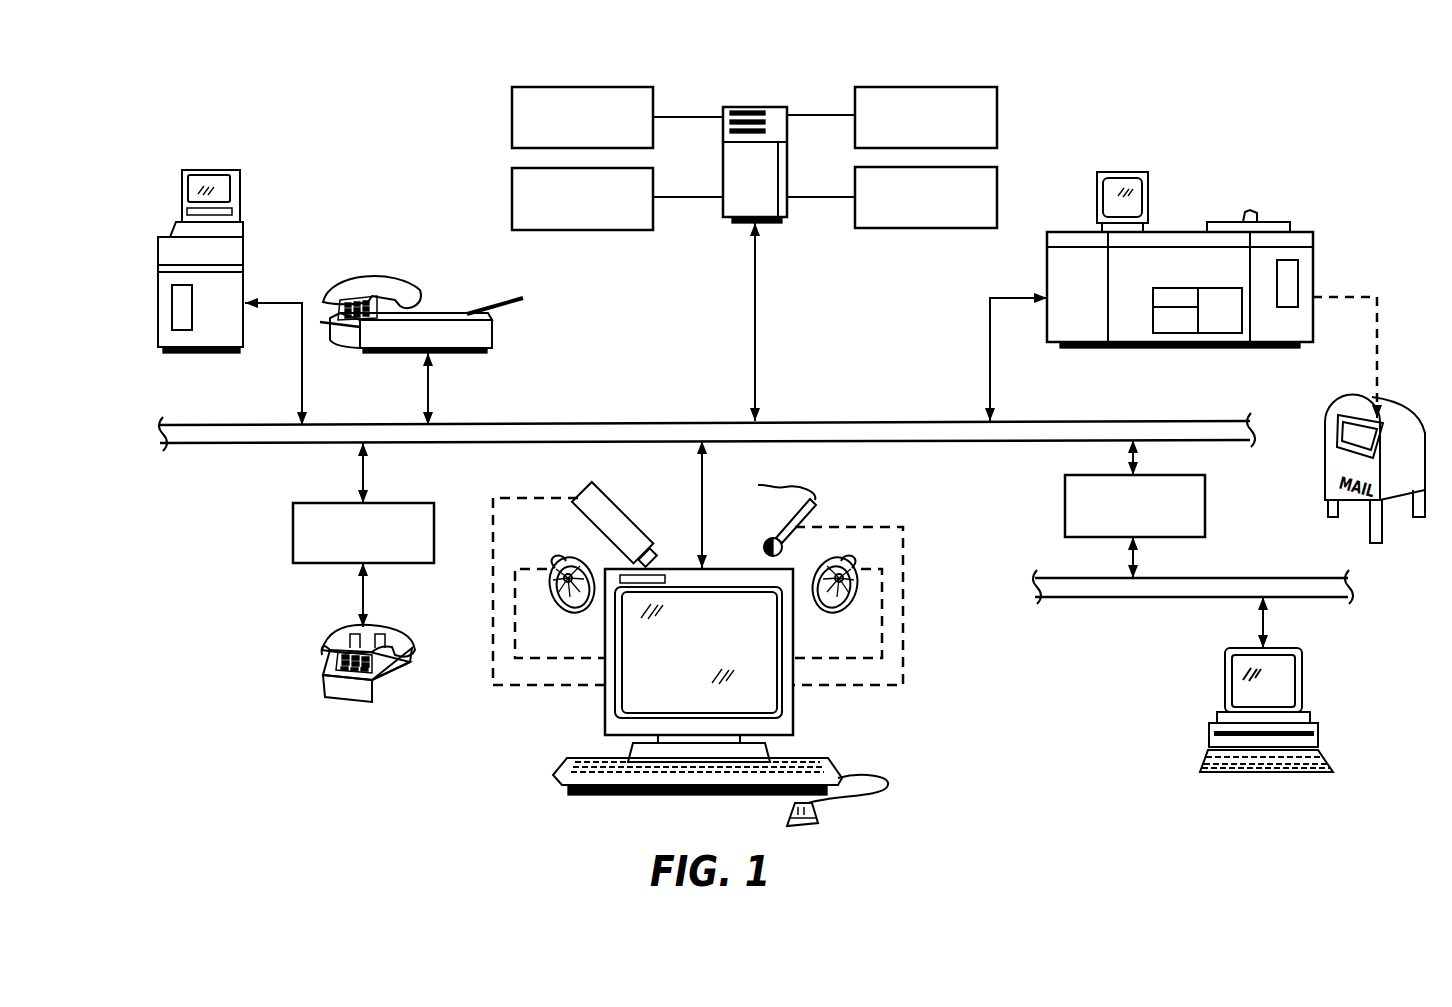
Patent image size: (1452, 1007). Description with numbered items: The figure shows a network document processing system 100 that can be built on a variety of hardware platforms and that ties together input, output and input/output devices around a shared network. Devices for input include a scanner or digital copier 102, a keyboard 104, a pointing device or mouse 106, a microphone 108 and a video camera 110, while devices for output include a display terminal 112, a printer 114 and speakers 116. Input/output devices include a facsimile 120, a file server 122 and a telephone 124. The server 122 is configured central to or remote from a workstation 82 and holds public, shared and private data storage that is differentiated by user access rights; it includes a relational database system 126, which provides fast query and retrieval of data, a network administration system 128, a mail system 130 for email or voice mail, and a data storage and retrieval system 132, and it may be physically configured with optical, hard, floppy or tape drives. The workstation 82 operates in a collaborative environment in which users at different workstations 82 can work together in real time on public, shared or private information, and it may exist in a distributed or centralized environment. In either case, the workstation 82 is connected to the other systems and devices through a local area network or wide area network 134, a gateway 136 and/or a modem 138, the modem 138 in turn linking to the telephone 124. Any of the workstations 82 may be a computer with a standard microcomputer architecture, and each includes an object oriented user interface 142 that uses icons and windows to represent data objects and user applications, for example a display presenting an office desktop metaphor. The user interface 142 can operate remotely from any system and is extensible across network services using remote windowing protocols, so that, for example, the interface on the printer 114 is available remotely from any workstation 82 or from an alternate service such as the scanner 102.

The network document processing system 100 is at (418, 170).
The scanner or digital copier 102 is at (245, 285).
The keyboard 104 is at (795, 760).
The pointing device or mouse 106 is at (807, 828).
The microphone 108 is at (787, 522).
The video camera 110 is at (618, 515).
The display terminal 112 is at (212, 173).
The printer 114 is at (1177, 228).
The speakers 116 is at (580, 613).
The facsimile 120 is at (453, 353).
The file server 122 is at (752, 107).
The telephone 124 is at (358, 690).
The relational database system 126 is at (997, 93).
The network administration system 128 is at (512, 105).
The mail system 130 is at (918, 228).
The data storage and retrieval system 132 is at (597, 230).
The local area network or wide area network 134 is at (830, 421).
The gateway 136 is at (1065, 488).
The modem 138 is at (293, 518).
The object oriented user interface 142 is at (222, 193).
The workstation 82 is at (555, 717).